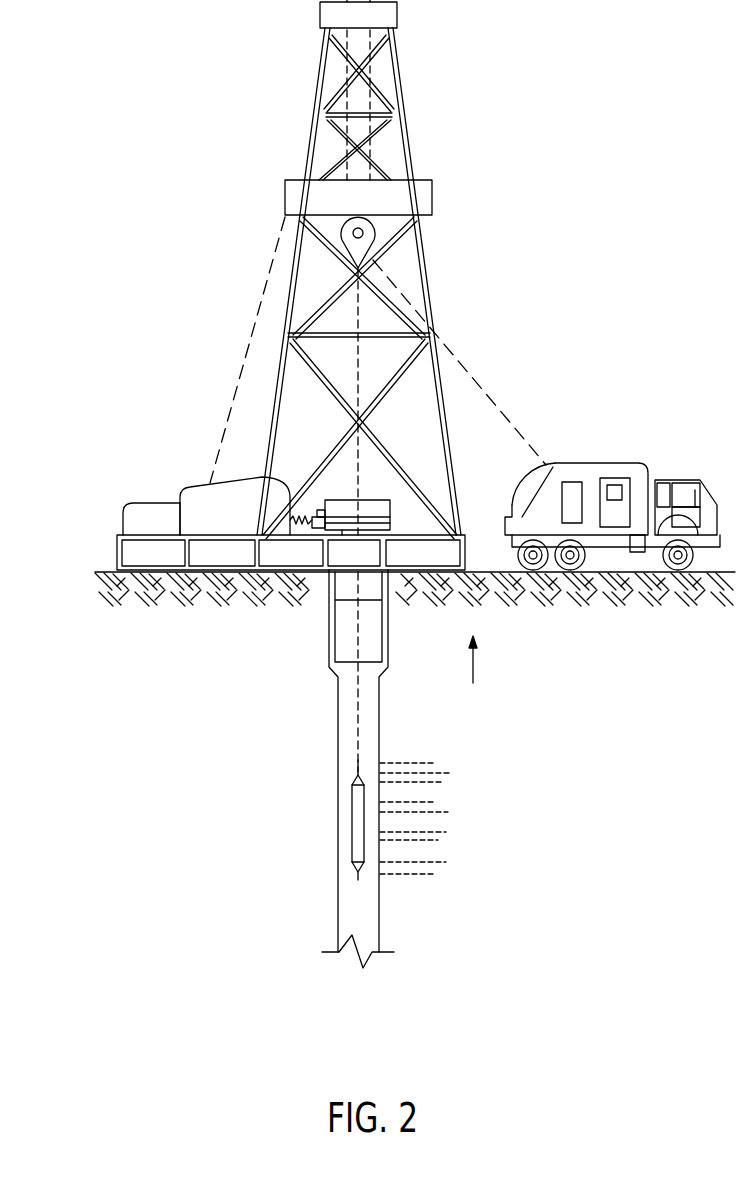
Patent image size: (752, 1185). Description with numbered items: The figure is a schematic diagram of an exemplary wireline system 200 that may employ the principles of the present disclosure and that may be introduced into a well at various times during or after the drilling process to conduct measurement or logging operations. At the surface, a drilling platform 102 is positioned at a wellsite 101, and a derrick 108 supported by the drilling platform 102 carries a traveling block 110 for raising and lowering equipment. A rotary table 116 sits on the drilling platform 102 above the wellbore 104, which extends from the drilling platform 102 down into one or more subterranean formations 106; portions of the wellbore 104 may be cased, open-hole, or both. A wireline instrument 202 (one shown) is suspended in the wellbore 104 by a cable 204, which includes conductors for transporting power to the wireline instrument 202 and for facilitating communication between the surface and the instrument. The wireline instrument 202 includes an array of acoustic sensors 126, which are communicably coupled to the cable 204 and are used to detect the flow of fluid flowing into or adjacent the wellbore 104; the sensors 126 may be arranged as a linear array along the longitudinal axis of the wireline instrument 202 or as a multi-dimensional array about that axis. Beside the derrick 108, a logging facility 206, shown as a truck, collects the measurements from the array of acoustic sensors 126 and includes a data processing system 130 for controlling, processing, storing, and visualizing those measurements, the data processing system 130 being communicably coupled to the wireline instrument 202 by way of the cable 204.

The wireline system 200 is at (572, 245).
The derrick 108 is at (403, 88).
The traveling block 110 is at (373, 233).
The cable 204 is at (484, 392).
The wellsite 101 is at (466, 550).
The drilling platform 102 is at (117, 548).
The rotary table 116 is at (378, 500).
The logging facility 206 is at (643, 464).
The data processing system 130 is at (577, 482).
The wellbore 104 is at (379, 725).
The subterranean formations 106 is at (450, 762).
The wireline instrument 202 is at (349, 808).
The array of acoustic sensors 126 is at (355, 840).